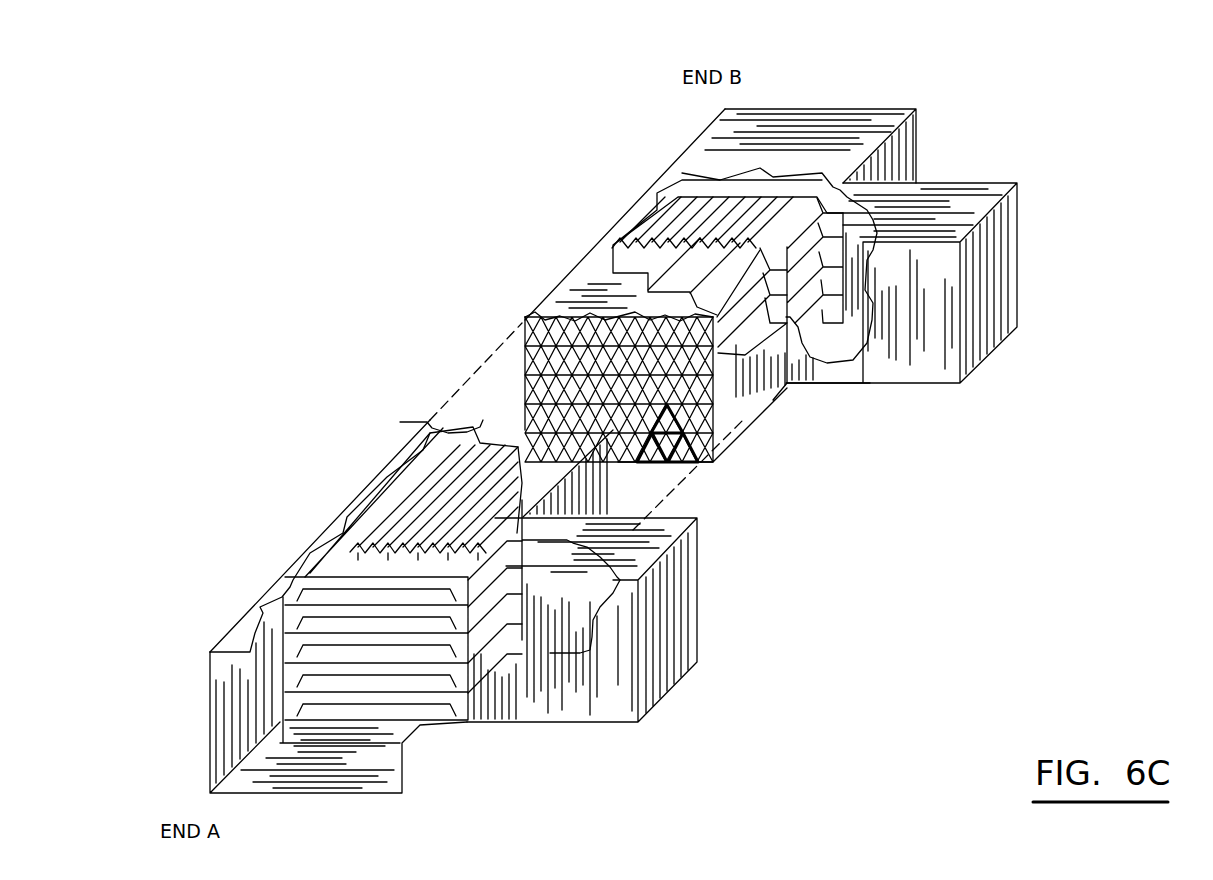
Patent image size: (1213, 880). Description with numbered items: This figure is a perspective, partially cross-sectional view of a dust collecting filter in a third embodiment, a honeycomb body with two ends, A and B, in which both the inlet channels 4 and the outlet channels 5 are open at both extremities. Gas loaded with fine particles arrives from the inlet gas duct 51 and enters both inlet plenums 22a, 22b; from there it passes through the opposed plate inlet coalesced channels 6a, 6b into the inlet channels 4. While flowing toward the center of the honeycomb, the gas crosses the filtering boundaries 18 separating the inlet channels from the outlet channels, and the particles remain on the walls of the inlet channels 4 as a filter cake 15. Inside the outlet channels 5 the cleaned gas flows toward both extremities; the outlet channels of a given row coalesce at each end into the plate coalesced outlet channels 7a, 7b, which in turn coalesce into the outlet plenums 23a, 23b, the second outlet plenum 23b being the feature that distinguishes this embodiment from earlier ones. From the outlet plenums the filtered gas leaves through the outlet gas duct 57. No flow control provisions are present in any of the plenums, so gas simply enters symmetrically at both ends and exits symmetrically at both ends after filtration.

The inlet channels 4 is at (543, 352).
The outlet channels 5 is at (568, 335).
The plate inlet coalesced channel 6a is at (413, 623).
The plate inlet coalesced channel 6b is at (787, 103).
The plate coalesced outlet channel 7a is at (493, 652).
The plate coalesced outlet channel 7b is at (807, 303).
The filter cake 15 is at (668, 462).
The filtering boundaries 18 is at (690, 407).
The inlet plenum 22a is at (370, 745).
The inlet plenum 22b is at (830, 98).
The outlet plenum 23a is at (550, 574).
The second outlet plenum 23b is at (974, 241).
The inlet gas duct 51 is at (918, 93).
The outlet gas duct 57 is at (1007, 282).